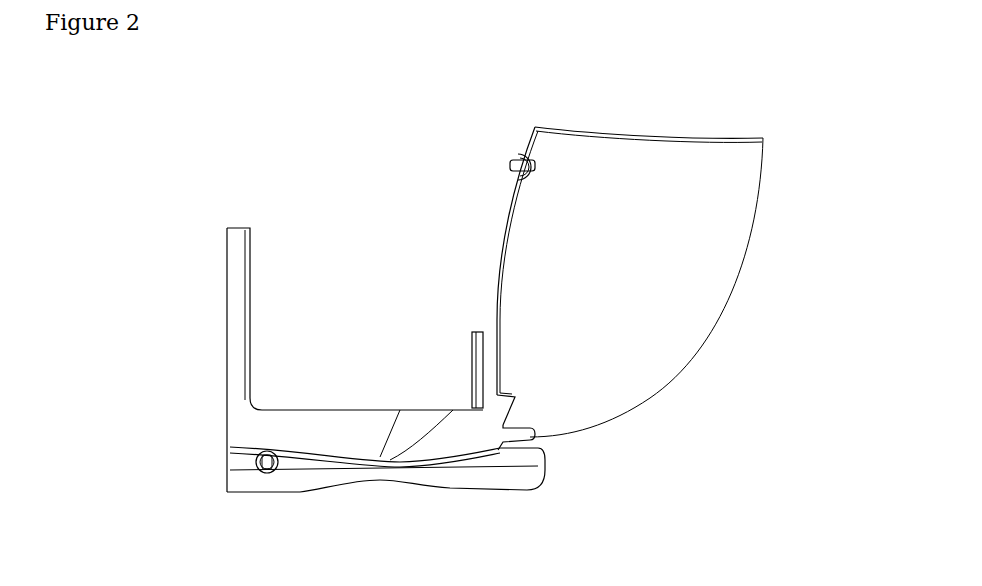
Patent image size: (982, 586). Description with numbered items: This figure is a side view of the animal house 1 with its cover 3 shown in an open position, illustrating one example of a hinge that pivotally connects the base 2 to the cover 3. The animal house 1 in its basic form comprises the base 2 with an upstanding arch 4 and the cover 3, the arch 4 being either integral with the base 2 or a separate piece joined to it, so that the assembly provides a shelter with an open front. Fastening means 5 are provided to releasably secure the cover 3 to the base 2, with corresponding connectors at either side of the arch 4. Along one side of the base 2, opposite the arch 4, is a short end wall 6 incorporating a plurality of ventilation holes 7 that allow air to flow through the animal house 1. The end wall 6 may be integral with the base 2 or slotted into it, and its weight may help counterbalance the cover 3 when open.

The animal house 1 is at (470, 335).
The base 2 is at (298, 482).
The cover 3 is at (627, 286).
The arch 4 is at (233, 287).
The fastening means 5 is at (262, 461).
The end wall 6 is at (487, 350).
The ventilation holes 7 is at (497, 378).